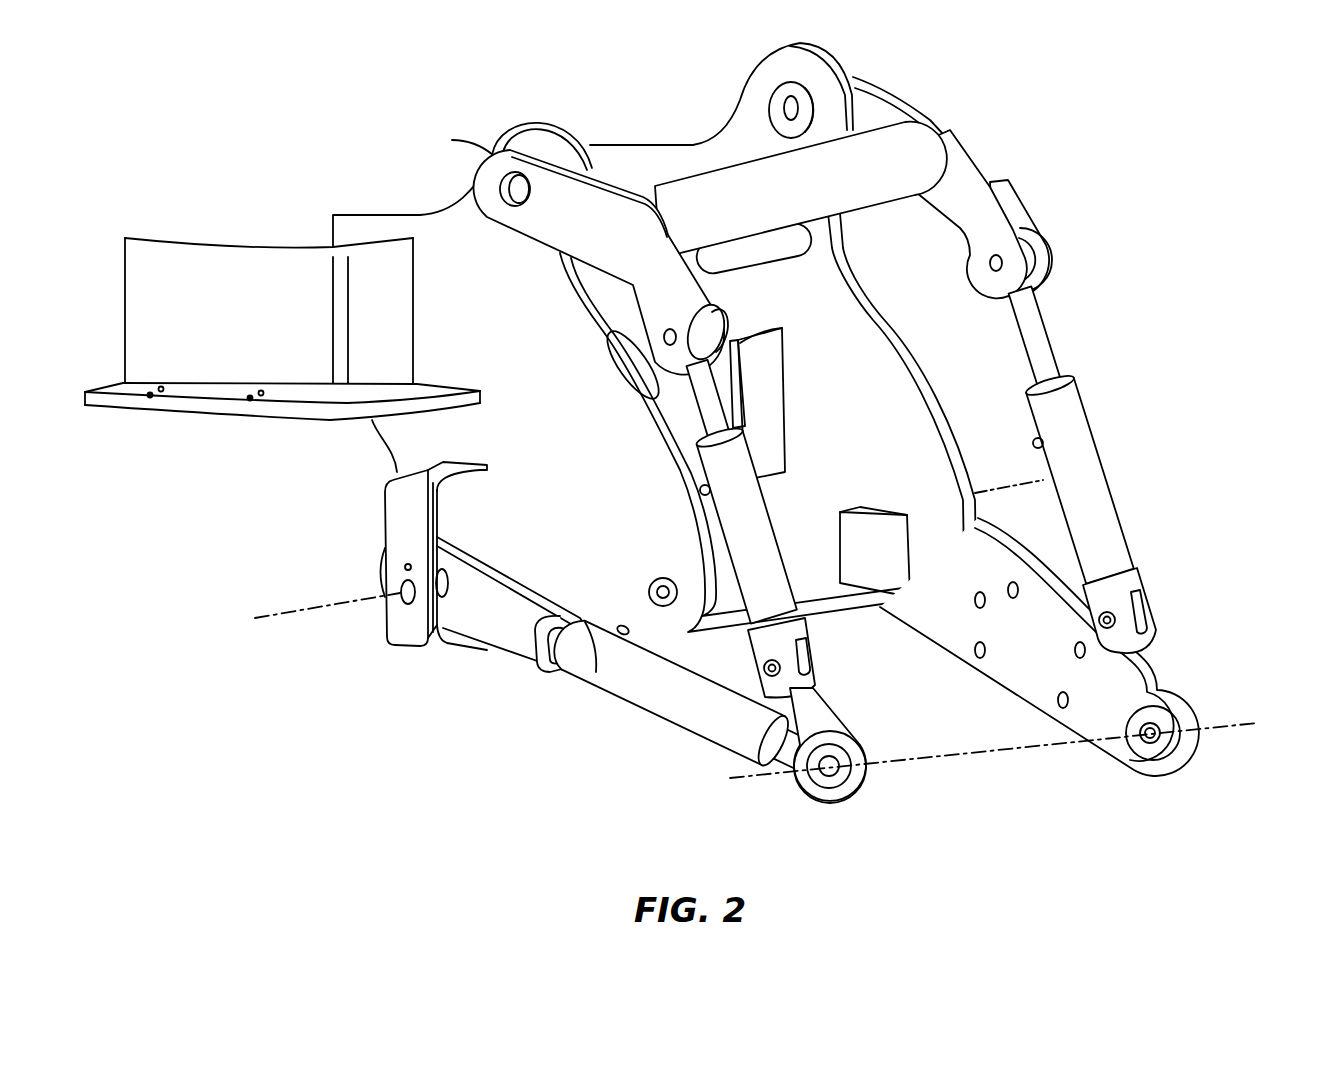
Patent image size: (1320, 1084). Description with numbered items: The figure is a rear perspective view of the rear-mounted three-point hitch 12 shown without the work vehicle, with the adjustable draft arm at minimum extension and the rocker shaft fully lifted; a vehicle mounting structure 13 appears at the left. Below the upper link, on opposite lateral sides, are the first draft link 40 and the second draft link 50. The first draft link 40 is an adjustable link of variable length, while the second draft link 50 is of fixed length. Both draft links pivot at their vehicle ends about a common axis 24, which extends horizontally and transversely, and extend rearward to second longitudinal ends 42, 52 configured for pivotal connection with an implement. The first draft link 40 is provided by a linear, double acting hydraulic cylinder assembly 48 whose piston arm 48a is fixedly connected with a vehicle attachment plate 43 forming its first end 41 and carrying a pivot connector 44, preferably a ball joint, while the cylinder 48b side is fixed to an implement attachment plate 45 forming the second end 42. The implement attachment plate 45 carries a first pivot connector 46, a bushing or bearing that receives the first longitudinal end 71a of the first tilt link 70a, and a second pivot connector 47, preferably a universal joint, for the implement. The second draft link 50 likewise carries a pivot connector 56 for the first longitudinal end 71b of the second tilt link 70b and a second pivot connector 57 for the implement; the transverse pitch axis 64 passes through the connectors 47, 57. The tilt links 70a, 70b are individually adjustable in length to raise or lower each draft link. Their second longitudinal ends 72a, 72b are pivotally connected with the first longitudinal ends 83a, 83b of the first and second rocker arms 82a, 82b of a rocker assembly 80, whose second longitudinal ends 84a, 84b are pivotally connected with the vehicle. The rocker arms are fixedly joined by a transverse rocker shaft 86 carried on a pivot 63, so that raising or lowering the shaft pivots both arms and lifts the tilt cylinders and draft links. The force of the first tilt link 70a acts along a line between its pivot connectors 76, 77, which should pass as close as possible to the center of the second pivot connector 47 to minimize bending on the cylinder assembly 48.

The three-point hitch 12 is at (690, 335).
The mounting bracket 13 is at (435, 203).
The common axis 24 is at (308, 603).
The first draft link 40 is at (624, 674).
The first longitudinal end 41 is at (380, 565).
The second longitudinal end 42 is at (873, 778).
The vehicle attachment plate 43 is at (500, 655).
The pivot connector 44 is at (447, 580).
The implement attachment plate 45 is at (866, 744).
The first pivot connector 46 is at (832, 697).
The second pivot connector 47 is at (820, 775).
The hydraulic cylinder assembly 48 is at (682, 716).
The piston arm 48a is at (550, 637).
The cylinder rod end 48b is at (723, 713).
The second draft link 50 is at (1074, 651).
The second longitudinal end 52 is at (1197, 748).
The pin 56 is at (1118, 623).
The second pivot connector 57 is at (1143, 740).
The pivot pin 63 is at (713, 266).
The pitch axis 64 is at (1236, 716).
The first tilt link 70a is at (794, 498).
The second tilt link 70b is at (1125, 469).
The first longitudinal end 71a is at (822, 652).
The first longitudinal end 71b is at (1152, 605).
The second longitudinal end 72a is at (740, 343).
The second longitudinal end 72b is at (1035, 265).
The pivot connector 76 is at (781, 670).
The pivot connector 77 is at (637, 387).
The rocker assembly 80 is at (898, 177).
The first rocker arm 82a is at (599, 262).
The second rocker arm 82b is at (958, 180).
The first longitudinal end 83a is at (620, 358).
The first longitudinal end 83b is at (990, 240).
The second longitudinal end 84a is at (496, 158).
The second longitudinal end 84b is at (860, 68).
The rocker shaft 86 is at (801, 190).